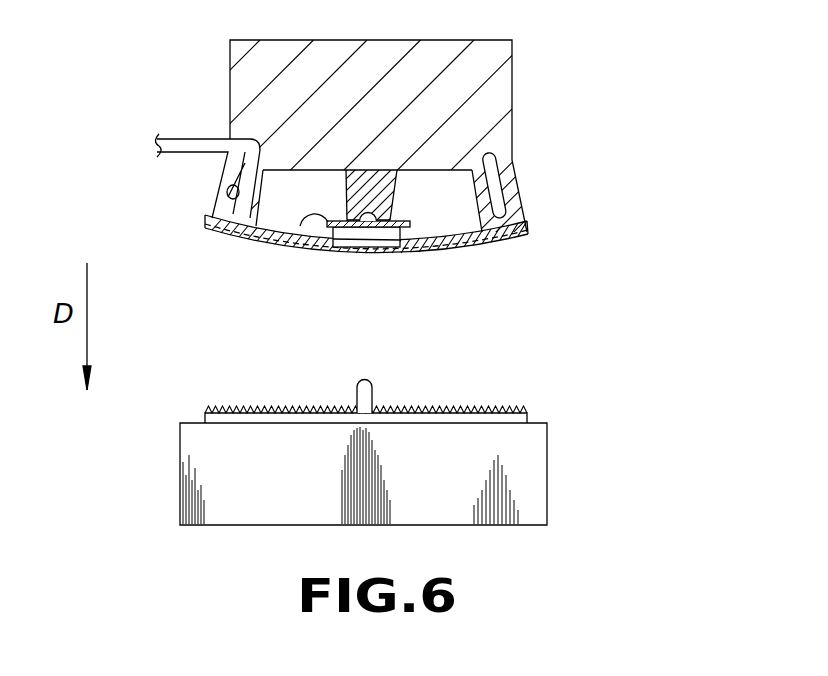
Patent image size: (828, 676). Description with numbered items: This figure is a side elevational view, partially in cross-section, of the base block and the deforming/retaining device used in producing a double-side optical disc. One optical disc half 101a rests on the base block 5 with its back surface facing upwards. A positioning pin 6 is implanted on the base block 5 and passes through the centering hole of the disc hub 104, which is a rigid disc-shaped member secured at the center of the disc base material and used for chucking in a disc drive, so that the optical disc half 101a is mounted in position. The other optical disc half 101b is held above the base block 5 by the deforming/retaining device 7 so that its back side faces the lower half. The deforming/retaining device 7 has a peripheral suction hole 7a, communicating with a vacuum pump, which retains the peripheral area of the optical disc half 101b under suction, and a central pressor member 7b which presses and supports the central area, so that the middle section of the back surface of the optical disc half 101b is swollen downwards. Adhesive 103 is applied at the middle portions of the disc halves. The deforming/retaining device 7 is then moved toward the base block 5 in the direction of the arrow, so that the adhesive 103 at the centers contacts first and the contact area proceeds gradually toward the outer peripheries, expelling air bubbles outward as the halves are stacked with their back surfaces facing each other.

The deforming/retaining device 7 is at (498, 86).
The peripheral suction hole 7a is at (500, 190).
The central pressor member 7b is at (392, 185).
The optical disc half 101b is at (525, 236).
The adhesive 103 is at (396, 247).
The disc hub 104 is at (292, 241).
The base block 5 is at (527, 477).
The optical disc half 101a is at (527, 418).
The positioning pin 6 is at (366, 386).